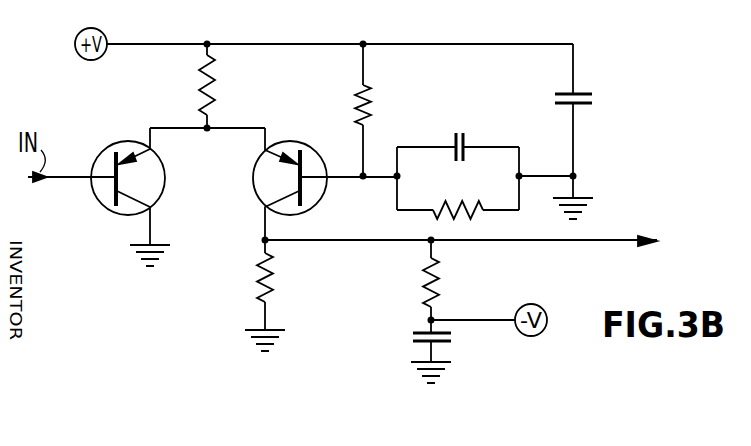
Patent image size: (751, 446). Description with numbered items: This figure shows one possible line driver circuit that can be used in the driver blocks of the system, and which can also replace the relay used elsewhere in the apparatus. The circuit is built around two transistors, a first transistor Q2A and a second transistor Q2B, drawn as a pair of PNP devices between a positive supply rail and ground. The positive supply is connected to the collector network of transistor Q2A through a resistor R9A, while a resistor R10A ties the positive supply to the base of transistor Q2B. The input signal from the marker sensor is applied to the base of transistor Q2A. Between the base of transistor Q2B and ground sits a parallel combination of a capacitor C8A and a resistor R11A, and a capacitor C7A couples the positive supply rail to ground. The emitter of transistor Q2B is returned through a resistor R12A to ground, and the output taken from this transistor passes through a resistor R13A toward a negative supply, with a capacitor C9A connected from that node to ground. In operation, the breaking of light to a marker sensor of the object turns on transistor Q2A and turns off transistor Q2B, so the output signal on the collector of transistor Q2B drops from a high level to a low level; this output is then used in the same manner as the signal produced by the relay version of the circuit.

The transistor Q2A is at (101, 207).
The transistor Q2B is at (262, 198).
The resistor R9A is at (203, 80).
The resistor R10A is at (361, 100).
The resistor R11A is at (481, 205).
The resistor R12A is at (274, 283).
The resistor R13A is at (438, 290).
The capacitor C7A is at (592, 104).
The capacitor C8A is at (463, 131).
The capacitor C9A is at (449, 343).